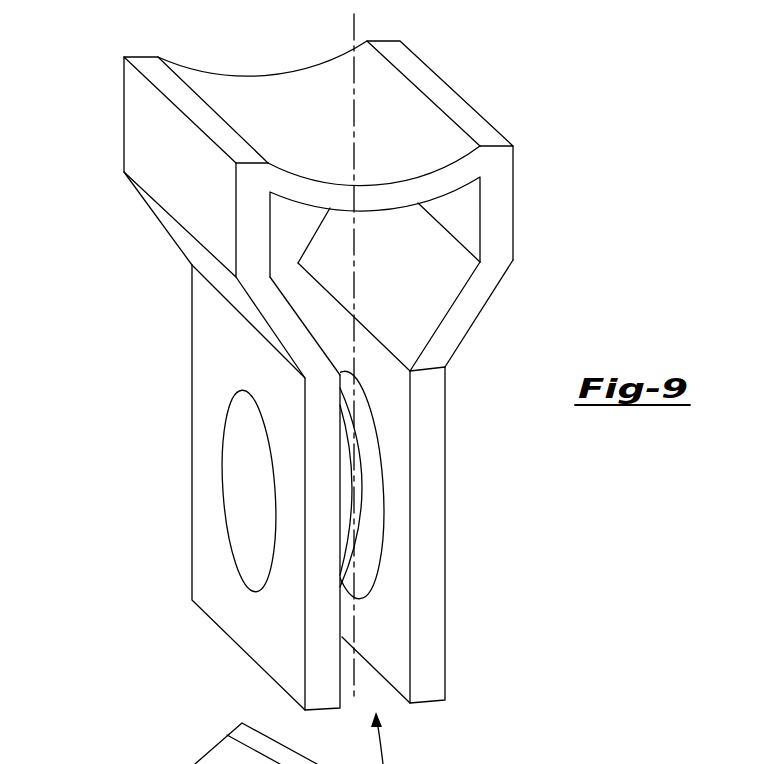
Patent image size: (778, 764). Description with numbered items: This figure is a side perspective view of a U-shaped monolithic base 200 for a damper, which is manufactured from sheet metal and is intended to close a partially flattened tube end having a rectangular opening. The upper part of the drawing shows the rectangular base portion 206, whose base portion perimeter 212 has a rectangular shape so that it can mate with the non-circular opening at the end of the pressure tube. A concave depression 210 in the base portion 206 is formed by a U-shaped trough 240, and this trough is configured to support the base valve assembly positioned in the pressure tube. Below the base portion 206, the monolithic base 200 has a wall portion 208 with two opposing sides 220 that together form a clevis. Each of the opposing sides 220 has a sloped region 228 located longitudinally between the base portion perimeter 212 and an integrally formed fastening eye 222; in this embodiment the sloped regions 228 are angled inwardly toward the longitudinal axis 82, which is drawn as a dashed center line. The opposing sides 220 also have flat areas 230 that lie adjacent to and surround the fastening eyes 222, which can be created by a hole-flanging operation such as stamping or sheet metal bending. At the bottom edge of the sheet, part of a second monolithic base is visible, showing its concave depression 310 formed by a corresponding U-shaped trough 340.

The monolithic base 200 is at (622, 128).
The concave depression 210 is at (224, 60).
The longitudinal axis 82 is at (442, 60).
The U-shaped trough 240 is at (320, 110).
The base portion perimeter 212 is at (153, 130).
The base portion 206 is at (524, 185).
The sloped region 228 is at (476, 297).
The opposing sides 220 is at (320, 670).
The fastening eye 222 is at (248, 457).
The flat area 230 is at (205, 581).
The wall portion 208 is at (462, 536).
The concave depression 310 is at (152, 763).
The U-shaped trough 340 is at (195, 763).